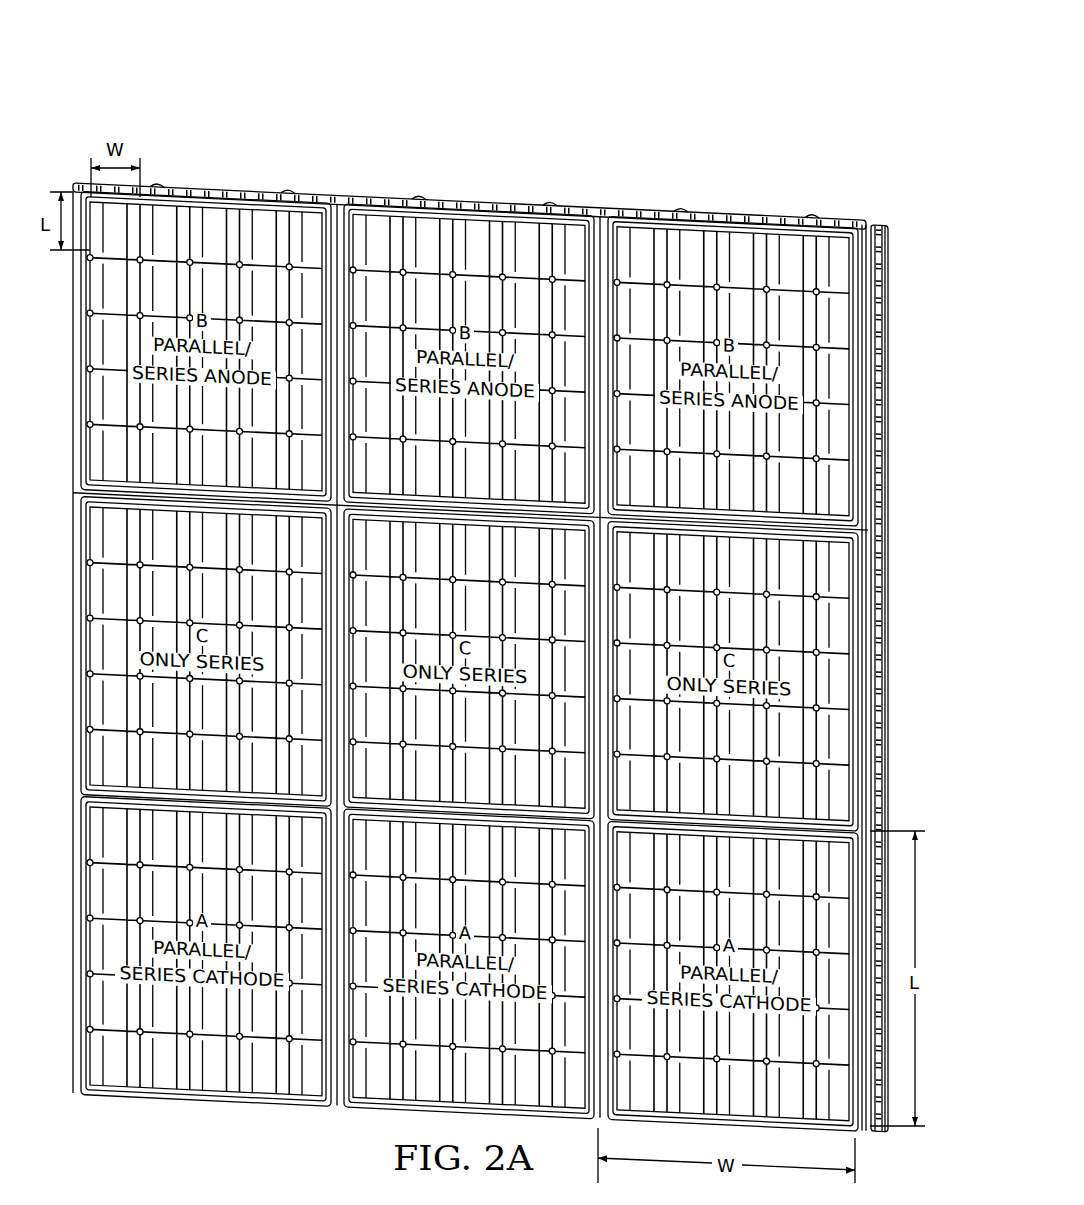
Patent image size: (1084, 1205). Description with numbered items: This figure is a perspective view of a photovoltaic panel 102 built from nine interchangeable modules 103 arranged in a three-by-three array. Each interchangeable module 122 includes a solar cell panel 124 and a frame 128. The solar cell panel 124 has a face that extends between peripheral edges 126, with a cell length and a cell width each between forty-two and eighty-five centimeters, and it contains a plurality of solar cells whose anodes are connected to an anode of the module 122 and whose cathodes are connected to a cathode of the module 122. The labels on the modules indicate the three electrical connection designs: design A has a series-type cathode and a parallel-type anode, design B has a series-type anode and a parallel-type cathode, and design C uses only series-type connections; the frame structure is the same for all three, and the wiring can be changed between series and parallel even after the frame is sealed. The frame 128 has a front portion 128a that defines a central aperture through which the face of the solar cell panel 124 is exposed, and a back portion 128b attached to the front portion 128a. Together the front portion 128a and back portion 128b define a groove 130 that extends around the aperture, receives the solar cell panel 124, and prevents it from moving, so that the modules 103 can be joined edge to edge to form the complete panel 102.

The photovoltaic panel 102 is at (519, 597).
The interchangeable modules 103 is at (438, 193).
The interchangeable module 122 is at (892, 343).
The solar cell panel 124 is at (693, 237).
The peripheral edges 126 is at (783, 240).
The frame 128 is at (519, 633).
The front portion 128a is at (638, 222).
The back portion 128b is at (918, 680).
The groove 130 is at (883, 380).